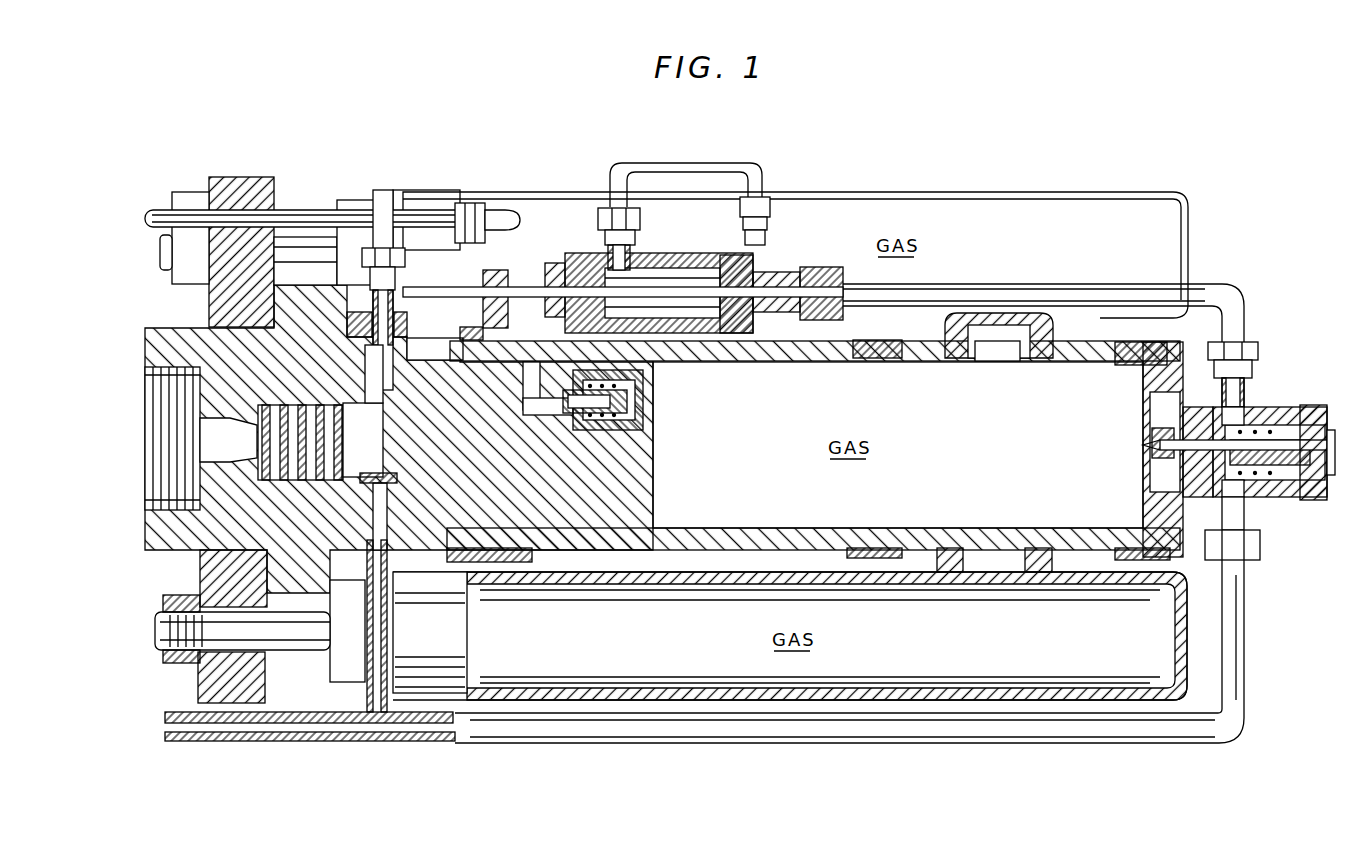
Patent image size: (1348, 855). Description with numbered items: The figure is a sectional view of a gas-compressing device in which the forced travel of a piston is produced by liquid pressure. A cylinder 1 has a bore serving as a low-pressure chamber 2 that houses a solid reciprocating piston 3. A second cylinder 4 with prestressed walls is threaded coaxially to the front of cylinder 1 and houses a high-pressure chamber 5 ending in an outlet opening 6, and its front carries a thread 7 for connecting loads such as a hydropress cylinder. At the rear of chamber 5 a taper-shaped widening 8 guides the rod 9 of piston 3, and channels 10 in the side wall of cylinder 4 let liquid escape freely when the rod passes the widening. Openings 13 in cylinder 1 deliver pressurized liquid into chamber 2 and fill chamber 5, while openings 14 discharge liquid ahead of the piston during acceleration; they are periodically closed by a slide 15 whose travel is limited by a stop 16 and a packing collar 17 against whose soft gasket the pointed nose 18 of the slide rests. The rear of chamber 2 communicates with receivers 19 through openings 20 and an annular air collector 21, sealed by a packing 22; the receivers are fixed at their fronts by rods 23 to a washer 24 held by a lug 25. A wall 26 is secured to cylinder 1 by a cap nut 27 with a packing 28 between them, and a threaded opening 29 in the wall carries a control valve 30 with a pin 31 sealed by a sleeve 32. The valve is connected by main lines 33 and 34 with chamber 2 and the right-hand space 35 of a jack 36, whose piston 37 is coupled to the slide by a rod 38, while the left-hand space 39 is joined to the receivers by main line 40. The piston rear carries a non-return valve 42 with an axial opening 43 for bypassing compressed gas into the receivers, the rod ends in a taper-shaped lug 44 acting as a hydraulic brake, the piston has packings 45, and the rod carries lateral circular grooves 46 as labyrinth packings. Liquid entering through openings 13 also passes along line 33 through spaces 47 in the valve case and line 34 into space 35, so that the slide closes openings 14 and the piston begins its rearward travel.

The cylinder 1 is at (472, 327).
The low-pressure chamber 2 is at (805, 362).
The piston 3 is at (655, 462).
The cylinder 4 is at (535, 418).
The high-pressure chamber 5 is at (342, 340).
The outlet opening 6 is at (200, 440).
The thread 7 is at (147, 377).
The taper-shaped widening 8 is at (363, 411).
The rod 9 is at (362, 482).
The channels 10 is at (350, 495).
The openings 13 is at (352, 575).
The openings 14 is at (420, 562).
The slide 15 is at (495, 270).
The stop 16 is at (550, 300).
The packing collar 17 is at (408, 325).
The pointed nose 18 is at (452, 347).
The receivers 19 is at (1068, 210).
The openings 20 is at (1015, 352).
The annular air collector 21 is at (990, 313).
The packing 22 is at (895, 342).
The rods 23 is at (158, 640).
The washer 24 is at (198, 690).
The lug 25 is at (262, 580).
The wall 26 is at (1130, 383).
The cap nut 27 is at (1160, 342).
The packing 28 is at (1213, 345).
The threaded opening 29 is at (1150, 488).
The control valve 30 is at (1250, 415).
The pin 31 is at (1150, 448).
The sleeve 32 is at (1150, 438).
The main line 33 is at (935, 743).
The main line 34 is at (1066, 284).
The right-hand space 35 is at (805, 270).
The jack 36 is at (600, 255).
The piston 37 is at (735, 268).
The rod 38 is at (680, 290).
The left-hand space 39 is at (700, 270).
The main line 40 is at (685, 168).
The non-return valve 42 is at (645, 430).
The axial opening 43 is at (643, 400).
The taper-shaped lug 44 is at (185, 428).
The packings 45 is at (462, 562).
The lateral circular grooves 46 is at (295, 480).
The spaces 47 is at (1305, 490).